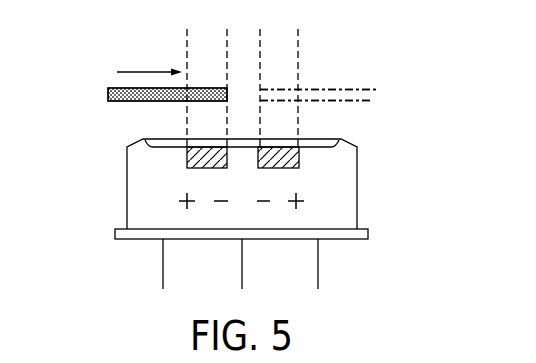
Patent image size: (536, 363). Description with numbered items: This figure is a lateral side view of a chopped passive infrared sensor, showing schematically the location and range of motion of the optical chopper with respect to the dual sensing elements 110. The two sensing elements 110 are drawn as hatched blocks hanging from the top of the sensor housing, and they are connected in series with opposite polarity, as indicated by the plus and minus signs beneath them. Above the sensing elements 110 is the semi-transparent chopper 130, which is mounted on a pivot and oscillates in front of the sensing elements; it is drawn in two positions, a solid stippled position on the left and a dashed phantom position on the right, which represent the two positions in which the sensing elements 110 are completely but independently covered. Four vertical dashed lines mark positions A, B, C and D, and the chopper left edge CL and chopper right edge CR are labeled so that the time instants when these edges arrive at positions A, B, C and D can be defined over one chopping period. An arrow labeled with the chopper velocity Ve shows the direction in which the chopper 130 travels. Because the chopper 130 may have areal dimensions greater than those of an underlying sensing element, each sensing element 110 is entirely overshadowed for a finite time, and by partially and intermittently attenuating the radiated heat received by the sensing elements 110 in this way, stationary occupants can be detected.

The dual sensing elements 110 is at (162, 170).
The semi-transparent chopper 130 is at (107, 92).
The position A is at (200, 88).
The position B is at (237, 88).
The position C is at (272, 88).
The position D is at (311, 88).
The chopper velocity Ve is at (149, 55).
The chopper left edge CL is at (167, 114).
The chopper right edge CR is at (305, 114).